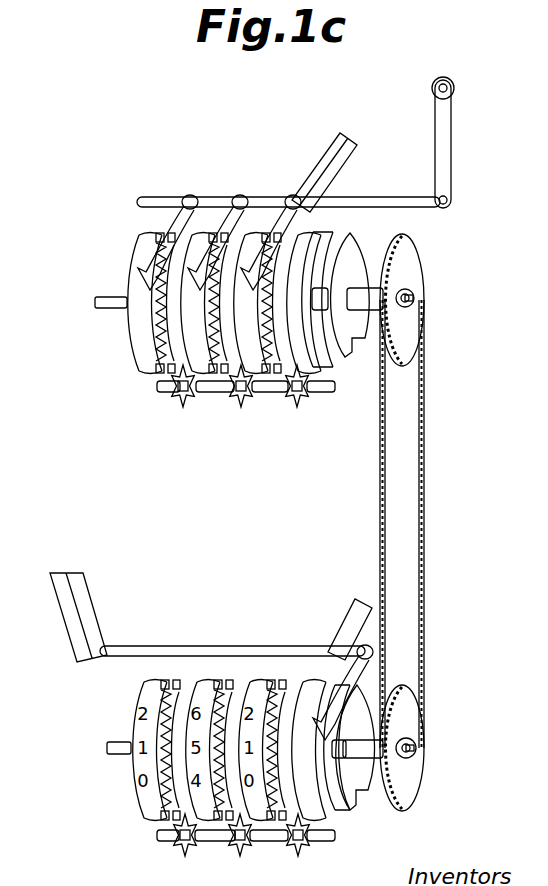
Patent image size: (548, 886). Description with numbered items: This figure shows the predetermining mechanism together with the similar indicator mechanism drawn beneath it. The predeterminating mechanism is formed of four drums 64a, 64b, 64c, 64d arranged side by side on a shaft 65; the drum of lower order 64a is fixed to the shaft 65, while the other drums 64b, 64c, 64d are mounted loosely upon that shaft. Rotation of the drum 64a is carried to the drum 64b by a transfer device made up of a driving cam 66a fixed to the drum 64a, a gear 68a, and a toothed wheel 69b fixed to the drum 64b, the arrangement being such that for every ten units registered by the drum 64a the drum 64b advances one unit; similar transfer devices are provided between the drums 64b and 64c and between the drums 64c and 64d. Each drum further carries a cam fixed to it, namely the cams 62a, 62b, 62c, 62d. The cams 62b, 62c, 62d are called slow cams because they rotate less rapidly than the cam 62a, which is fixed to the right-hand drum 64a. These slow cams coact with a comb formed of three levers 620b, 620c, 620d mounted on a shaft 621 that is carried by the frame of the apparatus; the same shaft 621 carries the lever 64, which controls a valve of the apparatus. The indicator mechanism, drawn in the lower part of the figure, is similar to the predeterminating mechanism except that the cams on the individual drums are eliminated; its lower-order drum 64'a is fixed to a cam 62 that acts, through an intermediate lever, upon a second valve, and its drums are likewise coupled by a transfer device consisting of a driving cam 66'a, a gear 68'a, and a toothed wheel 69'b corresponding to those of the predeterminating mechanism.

The shaft 621 is at (147, 198).
The lever 620d is at (160, 214).
The lever 620c is at (215, 197).
The lever 620b is at (273, 196).
The lever 64 is at (455, 142).
The drum 64a is at (320, 228).
The cam 62a is at (358, 248).
The shaft 65 is at (413, 298).
The toothed wheel 69b is at (288, 348).
The driving cam 66a is at (323, 362).
The gear 68a is at (310, 392).
The drum 64d is at (137, 315).
The cam 62d is at (158, 334).
The drum 64c is at (168, 367).
The cam 62c is at (213, 373).
The drum 64b is at (270, 383).
The cam 62b is at (272, 368).
The drum of lower order 64'a is at (331, 714).
The cam 62 is at (356, 795).
The driving cam 66'a is at (268, 838).
The gear 68'a is at (256, 850).
The toothed wheel 69'b is at (286, 783).